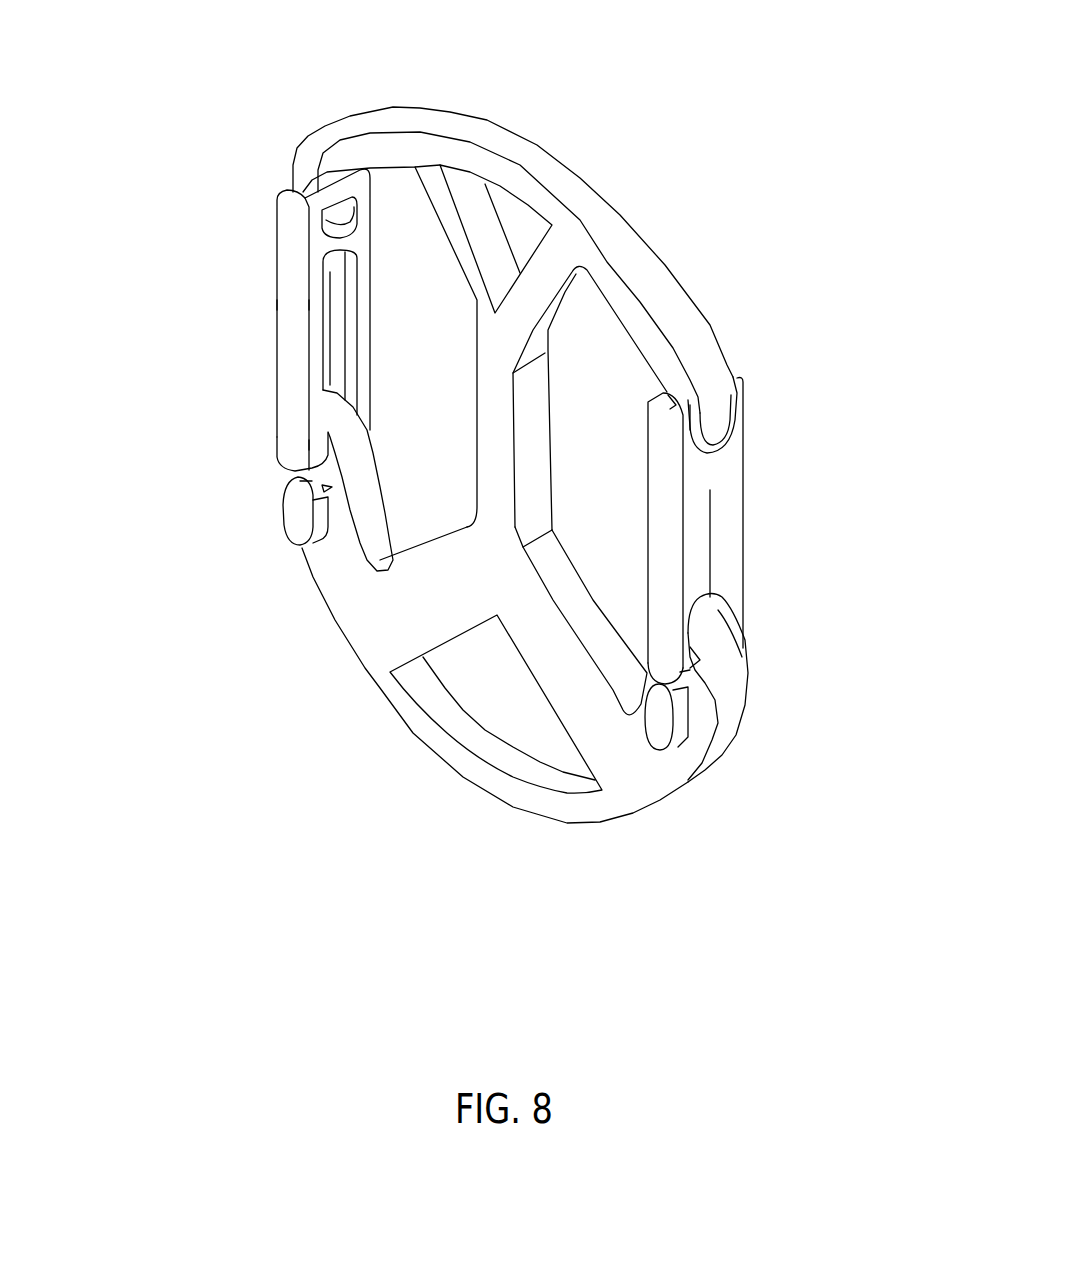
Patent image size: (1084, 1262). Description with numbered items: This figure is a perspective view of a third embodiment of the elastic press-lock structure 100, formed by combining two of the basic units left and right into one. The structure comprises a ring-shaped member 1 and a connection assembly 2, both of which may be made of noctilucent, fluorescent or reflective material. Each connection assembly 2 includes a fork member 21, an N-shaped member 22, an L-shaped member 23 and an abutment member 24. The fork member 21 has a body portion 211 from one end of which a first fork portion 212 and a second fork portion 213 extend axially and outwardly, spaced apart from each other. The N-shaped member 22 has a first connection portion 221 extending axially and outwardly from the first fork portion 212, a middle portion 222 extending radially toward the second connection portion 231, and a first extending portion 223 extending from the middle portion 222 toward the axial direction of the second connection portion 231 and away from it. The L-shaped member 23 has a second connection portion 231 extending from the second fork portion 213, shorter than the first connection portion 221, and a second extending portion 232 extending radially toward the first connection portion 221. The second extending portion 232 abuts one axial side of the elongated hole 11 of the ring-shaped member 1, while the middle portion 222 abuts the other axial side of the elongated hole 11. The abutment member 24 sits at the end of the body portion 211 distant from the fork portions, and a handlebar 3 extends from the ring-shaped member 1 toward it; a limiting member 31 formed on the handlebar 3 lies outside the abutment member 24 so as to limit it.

The elastic press-lock structure 100 is at (552, 103).
The ring-shaped member 1 is at (304, 588).
The elongated hole 11 is at (325, 488).
The connection assembly 2 is at (146, 318).
The fork member 21 is at (262, 203).
The body portion 211 is at (333, 245).
The first fork portion 212 is at (365, 325).
The second fork portion 213 is at (292, 329).
The N-shaped member 22 is at (388, 439).
The first connection portion 221 is at (368, 422).
The middle portion 222 is at (320, 483).
The first extending portion 223 is at (325, 525).
The L-shaped member 23 is at (265, 449).
The second connection portion 231 is at (317, 425).
The second extending portion 232 is at (690, 667).
The abutment member 24 is at (703, 437).
The handlebar 3 is at (663, 248).
The limiting member 31 is at (336, 215).